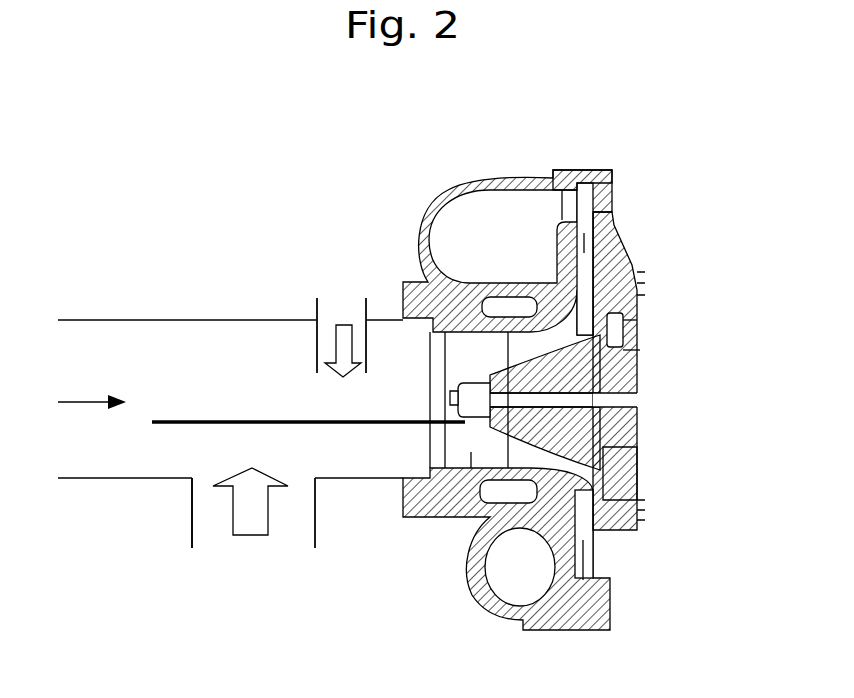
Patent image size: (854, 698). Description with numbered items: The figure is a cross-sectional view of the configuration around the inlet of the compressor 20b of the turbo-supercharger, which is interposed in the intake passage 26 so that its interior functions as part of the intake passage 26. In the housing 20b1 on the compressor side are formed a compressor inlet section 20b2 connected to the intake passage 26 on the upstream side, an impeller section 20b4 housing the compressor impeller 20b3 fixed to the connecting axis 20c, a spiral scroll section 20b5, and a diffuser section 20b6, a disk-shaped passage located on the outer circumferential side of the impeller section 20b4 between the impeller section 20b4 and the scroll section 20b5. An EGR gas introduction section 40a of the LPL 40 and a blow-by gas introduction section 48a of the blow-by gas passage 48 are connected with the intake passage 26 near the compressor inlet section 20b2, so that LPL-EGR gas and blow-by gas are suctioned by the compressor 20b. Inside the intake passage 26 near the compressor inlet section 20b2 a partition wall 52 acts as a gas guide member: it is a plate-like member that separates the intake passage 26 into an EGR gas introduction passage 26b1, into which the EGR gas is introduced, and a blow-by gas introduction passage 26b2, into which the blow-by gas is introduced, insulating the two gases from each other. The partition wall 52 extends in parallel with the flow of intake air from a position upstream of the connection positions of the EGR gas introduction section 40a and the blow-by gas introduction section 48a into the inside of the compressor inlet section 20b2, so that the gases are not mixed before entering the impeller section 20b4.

The compressor 20b is at (536, 152).
The housing 20b1 is at (583, 167).
The compressor inlet section 20b2 is at (436, 503).
The compressor impeller 20b3 is at (610, 333).
The impeller section 20b4 is at (620, 480).
The scroll section 20b5 is at (472, 213).
The diffuser section 20b6 is at (620, 213).
The connecting axis 20c is at (610, 402).
The intake passage 26 is at (94, 495).
The EGR gas introduction passage 26b1 is at (328, 455).
The blow-by gas introduction passage 26b2 is at (275, 387).
The LPL 40 is at (253, 513).
The EGR gas introduction section 40a is at (203, 528).
The blow-by gas passage 48 is at (341, 335).
The blow-by gas introduction section 48a is at (335, 306).
The partition wall 52 is at (203, 420).